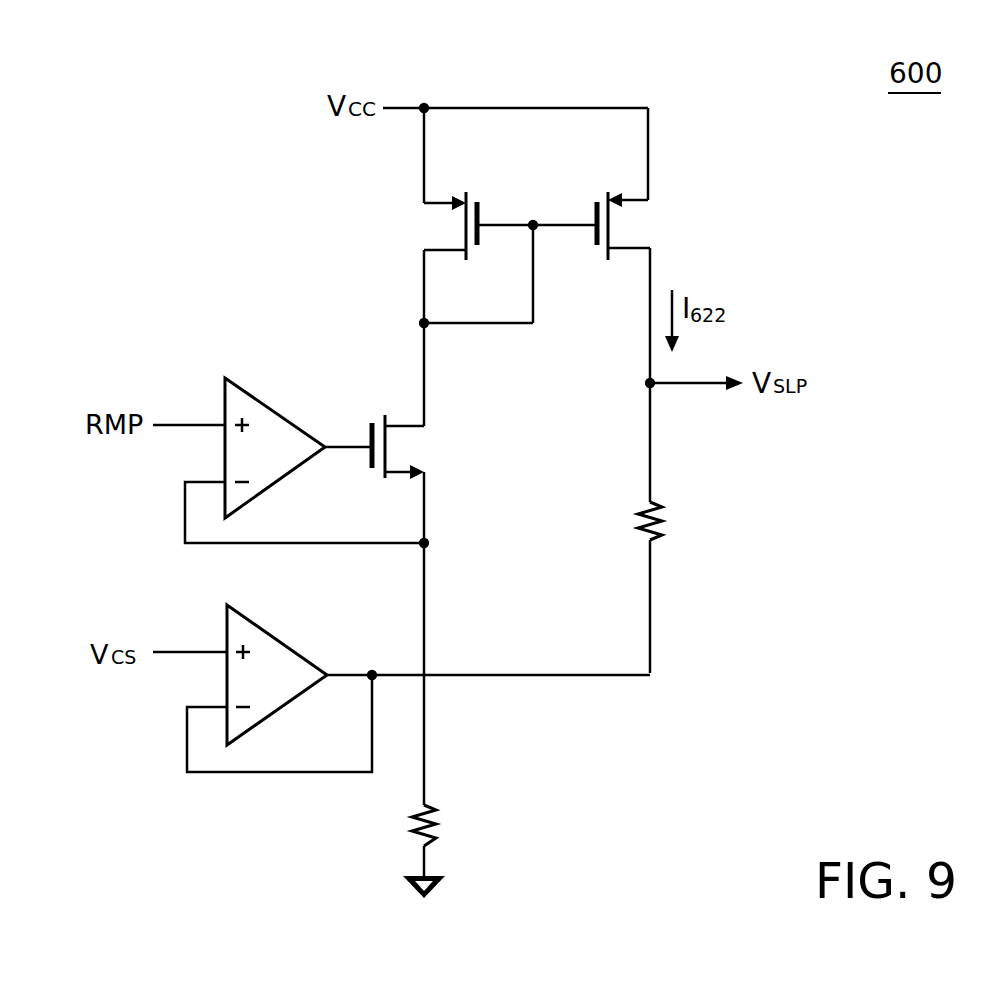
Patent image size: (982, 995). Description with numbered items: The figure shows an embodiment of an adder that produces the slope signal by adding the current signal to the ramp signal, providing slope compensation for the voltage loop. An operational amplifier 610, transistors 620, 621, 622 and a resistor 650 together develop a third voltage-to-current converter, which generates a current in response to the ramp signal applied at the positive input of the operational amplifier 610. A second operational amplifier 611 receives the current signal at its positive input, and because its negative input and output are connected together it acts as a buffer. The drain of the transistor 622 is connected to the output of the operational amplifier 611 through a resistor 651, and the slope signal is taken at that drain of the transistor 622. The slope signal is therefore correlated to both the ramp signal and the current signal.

The operational amplifier 610 is at (278, 408).
The operational amplifier 611 is at (279, 633).
The transistor 620 is at (428, 448).
The transistor 621 is at (420, 229).
The transistor 622 is at (657, 220).
The resistor 650 is at (448, 832).
The resistor 651 is at (668, 522).